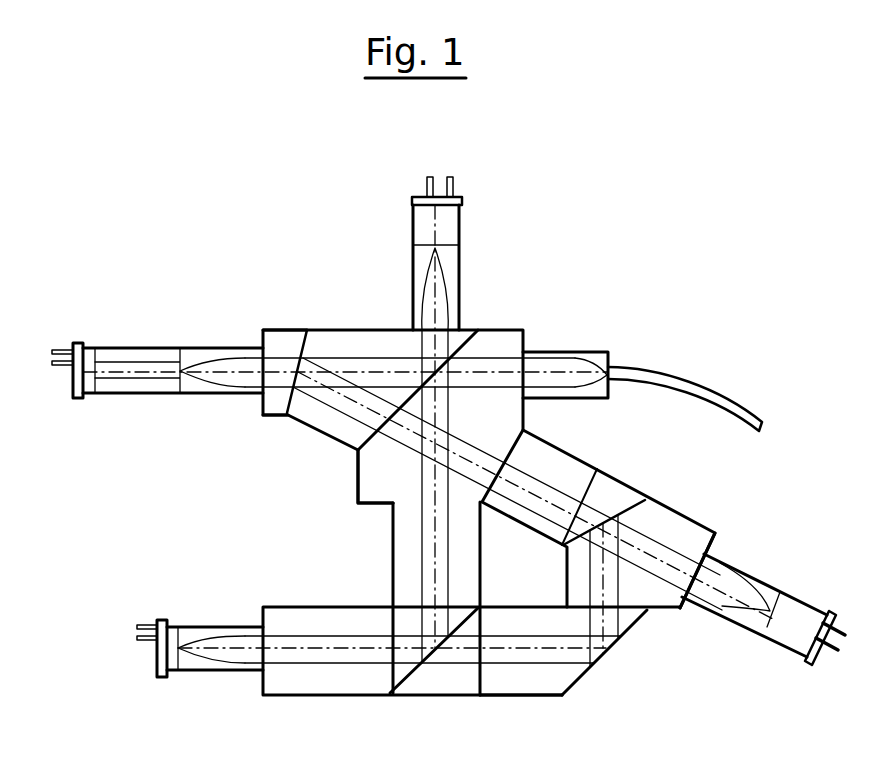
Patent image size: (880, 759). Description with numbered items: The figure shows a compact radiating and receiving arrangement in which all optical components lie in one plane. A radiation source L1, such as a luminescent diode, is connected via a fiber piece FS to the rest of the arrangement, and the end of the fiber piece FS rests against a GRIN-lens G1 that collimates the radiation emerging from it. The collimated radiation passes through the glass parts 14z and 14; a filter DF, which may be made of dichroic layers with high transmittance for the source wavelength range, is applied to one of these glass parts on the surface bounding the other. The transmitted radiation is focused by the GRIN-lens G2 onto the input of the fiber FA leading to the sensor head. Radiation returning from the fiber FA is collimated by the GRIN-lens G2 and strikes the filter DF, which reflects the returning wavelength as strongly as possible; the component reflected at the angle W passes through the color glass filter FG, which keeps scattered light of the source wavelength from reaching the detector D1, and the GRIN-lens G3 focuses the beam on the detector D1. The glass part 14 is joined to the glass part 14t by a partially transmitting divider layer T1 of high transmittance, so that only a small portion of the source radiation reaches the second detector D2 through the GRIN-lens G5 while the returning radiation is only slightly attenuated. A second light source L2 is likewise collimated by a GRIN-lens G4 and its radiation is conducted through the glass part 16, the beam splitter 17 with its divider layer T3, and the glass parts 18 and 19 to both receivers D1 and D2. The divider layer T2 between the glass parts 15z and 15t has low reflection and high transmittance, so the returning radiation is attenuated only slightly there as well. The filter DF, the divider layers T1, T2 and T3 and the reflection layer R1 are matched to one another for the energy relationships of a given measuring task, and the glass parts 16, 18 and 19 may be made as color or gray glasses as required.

The radiation source L1 is at (90, 353).
The fiber piece FS is at (140, 363).
The GRIN-lens G1 is at (217, 360).
The glass part 14 is at (308, 420).
The glass part 14z is at (280, 340).
The glass part 14t is at (370, 473).
The filter DF is at (318, 330).
The angle W is at (373, 408).
The divider layer T1 is at (468, 347).
The second detector D2 is at (442, 228).
The GRIN-lens G5 is at (445, 277).
The GRIN-lens G2 is at (572, 358).
The fiber FA is at (713, 390).
The glass part 15z is at (620, 490).
The color glass filter FG is at (565, 467).
The divider layer T2 is at (642, 510).
The glass part 15t is at (700, 537).
The detector D1 is at (788, 633).
The GRIN-lens G3 is at (733, 613).
The glass part 18 is at (393, 557).
The beam splitter 17 is at (456, 678).
The glass part 16 is at (323, 673).
The glass part 19 is at (535, 675).
The reflection layer R1 is at (592, 675).
The divider layer T3 is at (390, 677).
The second light source L2 is at (173, 662).
The GRIN-lens G4 is at (243, 663).